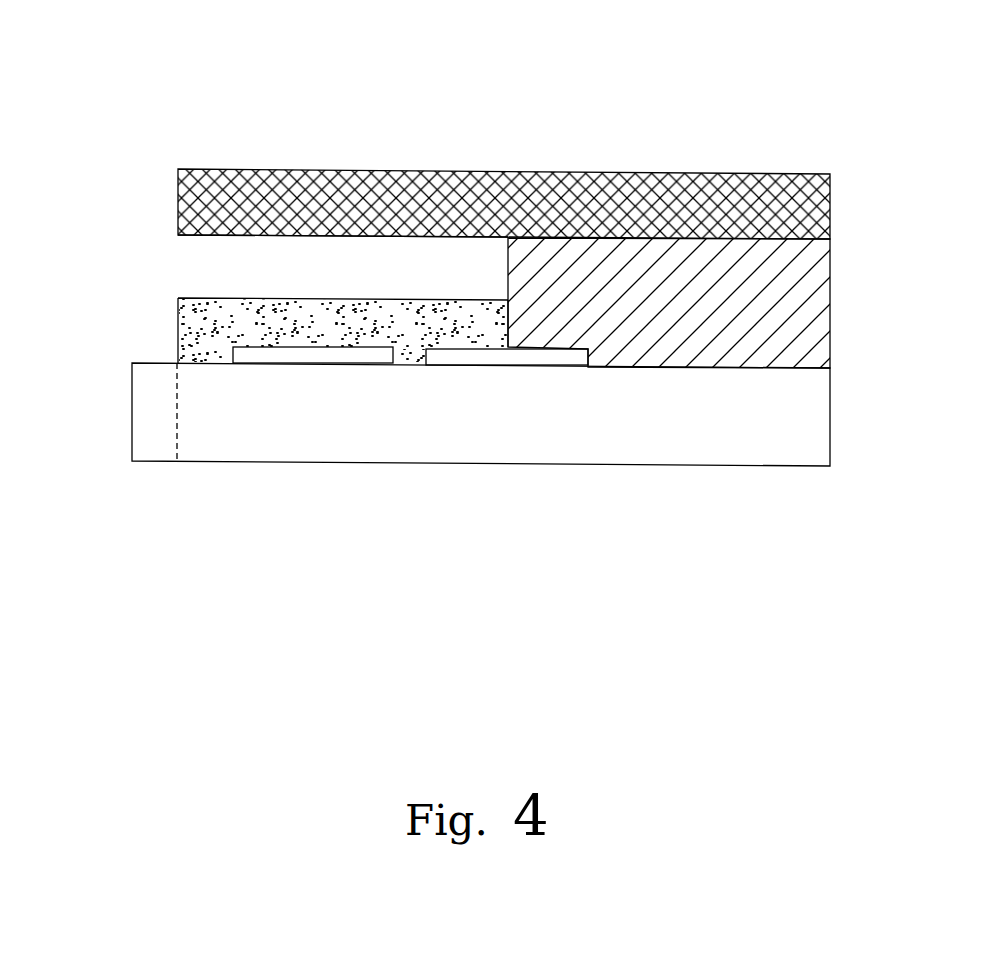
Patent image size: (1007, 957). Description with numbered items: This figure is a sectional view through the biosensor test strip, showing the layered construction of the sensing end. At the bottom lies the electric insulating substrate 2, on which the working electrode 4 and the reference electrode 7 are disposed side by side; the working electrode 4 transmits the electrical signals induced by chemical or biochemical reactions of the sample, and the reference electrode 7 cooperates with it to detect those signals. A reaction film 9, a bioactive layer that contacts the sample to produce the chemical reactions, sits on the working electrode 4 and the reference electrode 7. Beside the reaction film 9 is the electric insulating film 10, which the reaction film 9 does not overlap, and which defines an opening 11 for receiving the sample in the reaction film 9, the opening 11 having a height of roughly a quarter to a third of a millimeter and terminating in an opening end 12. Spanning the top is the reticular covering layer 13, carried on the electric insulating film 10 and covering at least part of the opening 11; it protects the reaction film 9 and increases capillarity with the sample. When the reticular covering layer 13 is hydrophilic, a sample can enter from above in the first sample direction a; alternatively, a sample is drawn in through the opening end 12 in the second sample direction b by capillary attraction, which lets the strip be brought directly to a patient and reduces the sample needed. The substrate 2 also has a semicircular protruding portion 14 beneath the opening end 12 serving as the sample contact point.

The electric insulating substrate 2 is at (738, 437).
The working electrode 4 is at (320, 355).
The reference electrode 7 is at (488, 355).
The reaction film 9 is at (195, 333).
The electric insulating film 10 is at (805, 308).
The opening 11 is at (373, 283).
The opening end 12 is at (181, 250).
The reticular covering layer 13 is at (617, 177).
The protruding portion 14 is at (147, 420).
The inlet of first sample a is at (376, 158).
The inlet of second sample b is at (168, 296).